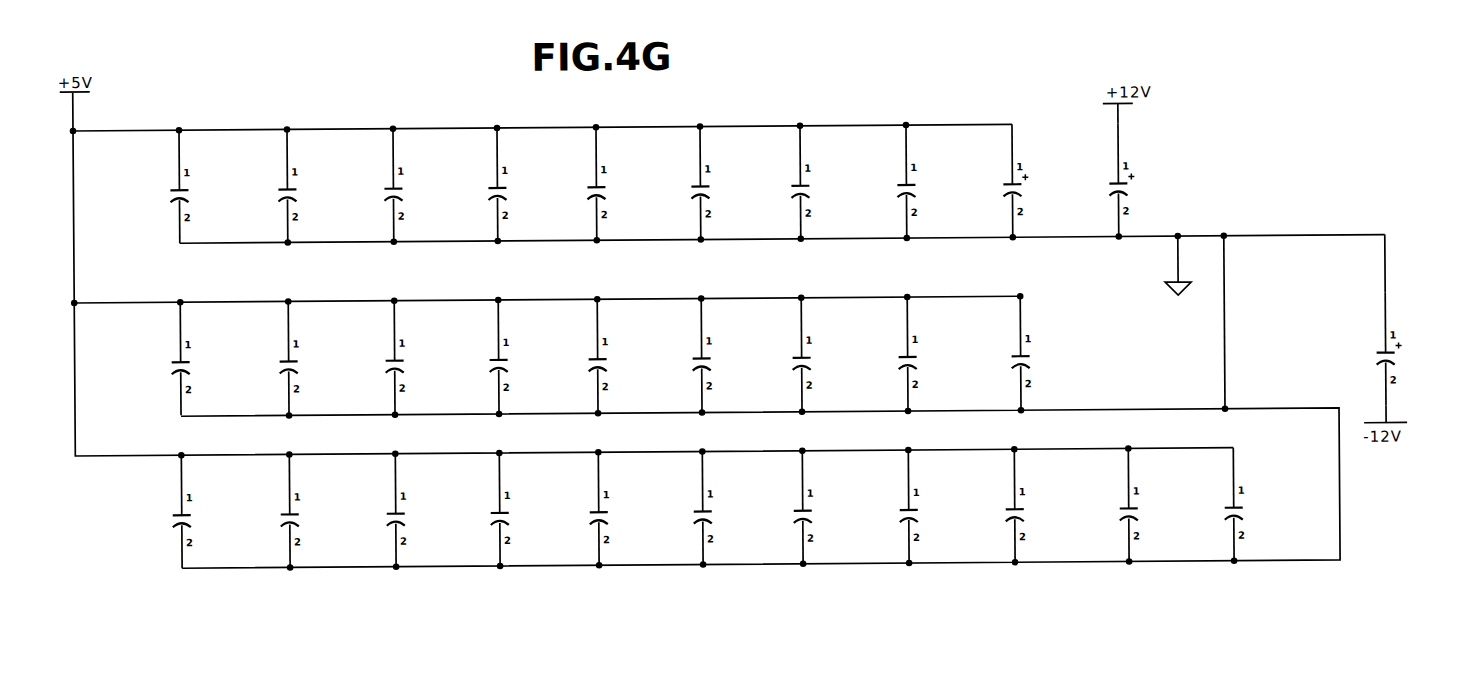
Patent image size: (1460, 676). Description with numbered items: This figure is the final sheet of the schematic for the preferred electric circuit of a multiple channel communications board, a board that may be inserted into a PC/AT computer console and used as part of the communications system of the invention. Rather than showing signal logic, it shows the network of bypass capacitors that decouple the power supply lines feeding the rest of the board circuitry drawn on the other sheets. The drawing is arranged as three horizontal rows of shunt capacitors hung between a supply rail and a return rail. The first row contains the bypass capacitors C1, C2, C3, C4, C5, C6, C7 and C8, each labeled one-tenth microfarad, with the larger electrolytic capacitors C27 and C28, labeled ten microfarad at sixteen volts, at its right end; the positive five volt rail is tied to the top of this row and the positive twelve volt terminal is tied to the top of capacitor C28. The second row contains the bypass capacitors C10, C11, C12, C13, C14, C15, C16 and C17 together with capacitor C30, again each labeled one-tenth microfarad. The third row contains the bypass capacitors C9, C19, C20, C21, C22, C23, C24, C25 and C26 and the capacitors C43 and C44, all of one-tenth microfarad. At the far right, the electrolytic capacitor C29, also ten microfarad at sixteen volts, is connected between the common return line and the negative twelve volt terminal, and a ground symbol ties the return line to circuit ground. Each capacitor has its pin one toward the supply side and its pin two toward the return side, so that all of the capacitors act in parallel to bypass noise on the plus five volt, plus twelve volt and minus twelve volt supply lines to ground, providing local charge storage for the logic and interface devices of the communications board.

The capacitor C1 is at (209, 187).
The capacitor C2 is at (317, 186).
The capacitor C3 is at (423, 185).
The capacitor C4 is at (527, 184).
The capacitor C5 is at (626, 184).
The capacitor C6 is at (730, 183).
The capacitor C7 is at (830, 182).
The capacitor C8 is at (936, 182).
The capacitor C9 is at (211, 512).
The capacitor C10 is at (210, 359).
The capacitor C11 is at (318, 358).
The capacitor C12 is at (424, 357).
The capacitor C13 is at (528, 356).
The capacitor C14 is at (627, 356).
The capacitor C15 is at (731, 355).
The capacitor C16 is at (831, 354).
The capacitor C17 is at (937, 354).
The capacitor C19 is at (319, 511).
The capacitor C20 is at (425, 510).
The capacitor C21 is at (529, 509).
The capacitor C22 is at (628, 509).
The capacitor C23 is at (732, 508).
The capacitor C24 is at (832, 507).
The capacitor C25 is at (938, 507).
The capacitor C26 is at (1044, 506).
The electrolytic capacitor C27 is at (1041, 181).
The electrolytic capacitor C28 is at (1147, 170).
The electrolytic capacitor C29 is at (1414, 328).
The capacitor C30 is at (1050, 353).
The capacitor C43 is at (1158, 505).
The capacitor C44 is at (1263, 504).